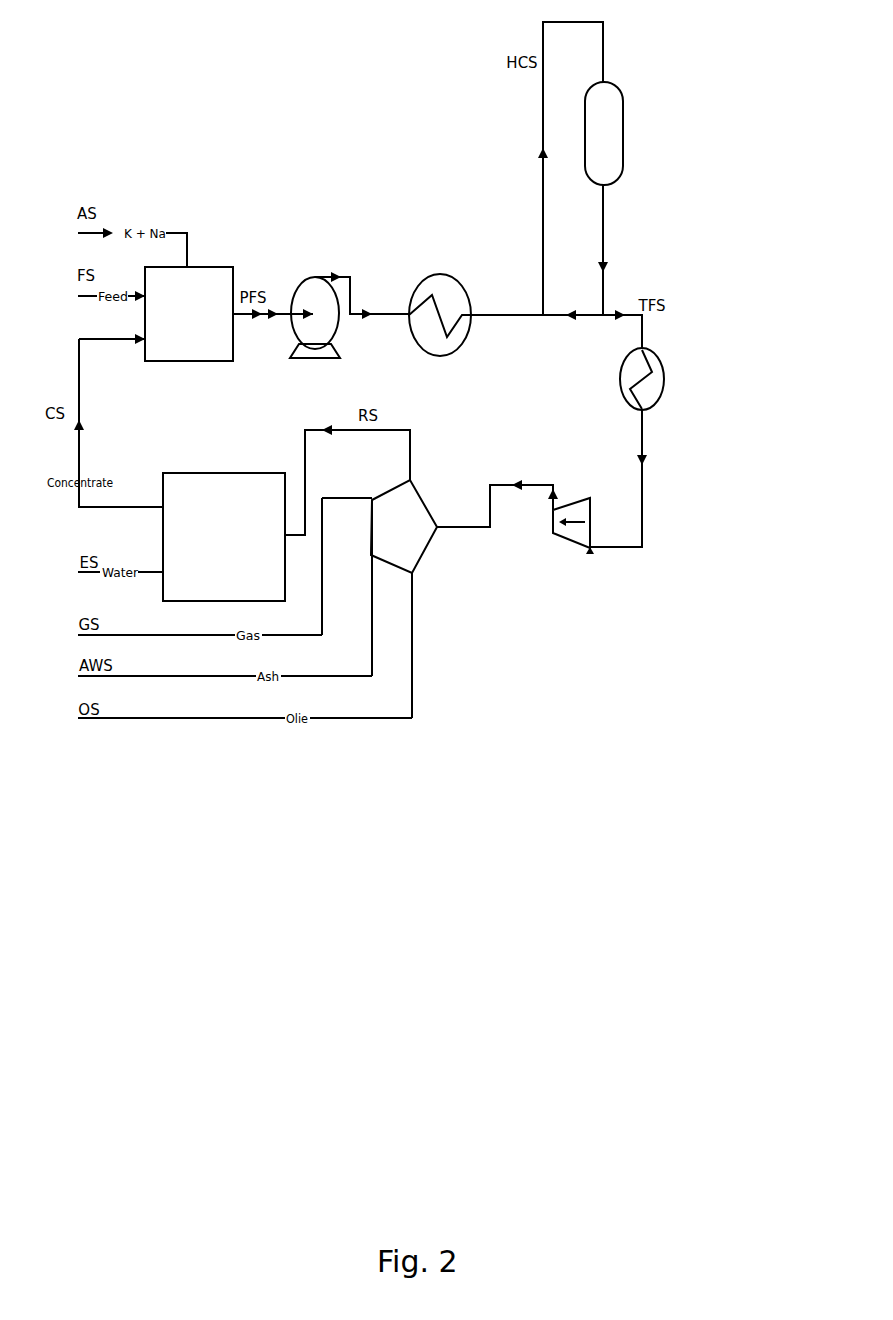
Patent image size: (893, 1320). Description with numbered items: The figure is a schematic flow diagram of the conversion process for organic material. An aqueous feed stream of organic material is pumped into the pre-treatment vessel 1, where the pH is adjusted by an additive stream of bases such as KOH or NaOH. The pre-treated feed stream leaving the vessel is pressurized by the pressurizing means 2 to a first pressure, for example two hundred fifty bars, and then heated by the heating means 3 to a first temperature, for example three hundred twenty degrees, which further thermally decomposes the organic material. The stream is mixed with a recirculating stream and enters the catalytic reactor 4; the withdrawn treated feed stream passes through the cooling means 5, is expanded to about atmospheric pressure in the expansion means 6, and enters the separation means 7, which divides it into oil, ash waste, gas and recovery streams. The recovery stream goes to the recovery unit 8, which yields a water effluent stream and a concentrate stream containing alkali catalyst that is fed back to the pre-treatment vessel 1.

The pre-treatment vessel 1 is at (198, 285).
The pressurizing means 2 is at (320, 295).
The heating means 3 is at (437, 292).
The catalytic reactor 4 is at (603, 106).
The cooling means 5 is at (650, 398).
The expansion means 6 is at (586, 545).
The separation means 7 is at (408, 540).
The recovery unit 8 is at (203, 507).